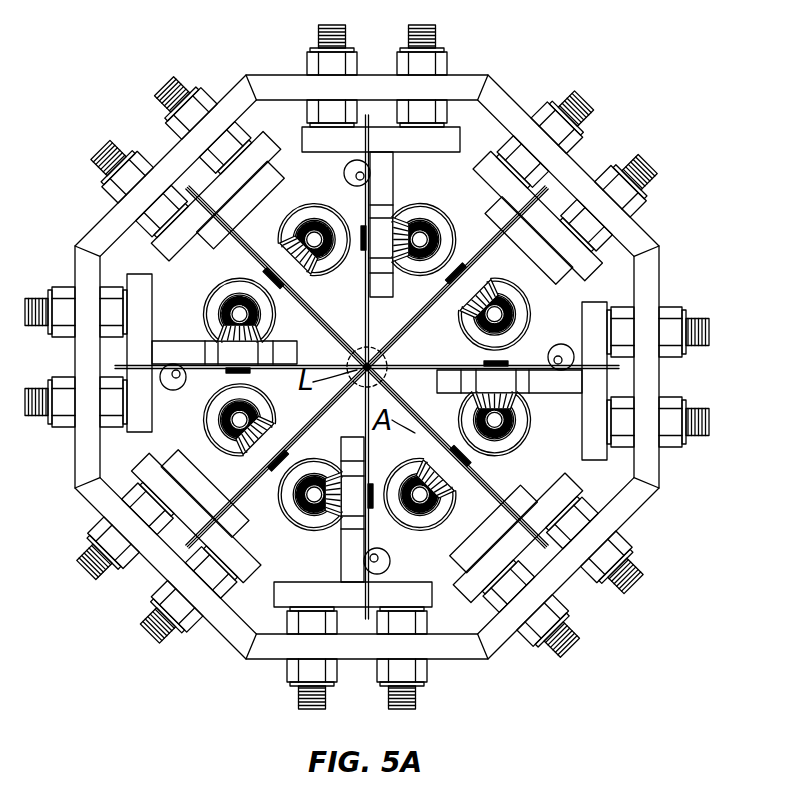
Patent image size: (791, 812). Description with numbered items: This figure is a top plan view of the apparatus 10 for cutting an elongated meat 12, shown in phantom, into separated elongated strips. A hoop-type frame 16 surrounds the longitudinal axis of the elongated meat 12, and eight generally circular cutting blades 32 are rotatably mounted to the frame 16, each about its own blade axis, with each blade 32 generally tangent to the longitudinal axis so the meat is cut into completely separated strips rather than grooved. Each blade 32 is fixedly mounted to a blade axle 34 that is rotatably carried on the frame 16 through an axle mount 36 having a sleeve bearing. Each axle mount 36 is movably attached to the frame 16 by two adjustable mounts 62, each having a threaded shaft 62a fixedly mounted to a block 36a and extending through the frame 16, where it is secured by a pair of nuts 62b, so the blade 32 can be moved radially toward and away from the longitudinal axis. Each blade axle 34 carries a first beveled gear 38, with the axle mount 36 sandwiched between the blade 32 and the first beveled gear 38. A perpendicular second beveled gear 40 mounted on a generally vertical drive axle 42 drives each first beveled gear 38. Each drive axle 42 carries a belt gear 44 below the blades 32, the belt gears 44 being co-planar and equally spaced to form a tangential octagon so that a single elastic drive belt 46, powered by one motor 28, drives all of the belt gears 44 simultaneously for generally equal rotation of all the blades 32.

The apparatus 10 is at (636, 50).
The elongated meat 12 is at (388, 360).
The frame 16 is at (573, 175).
The motor 28 is at (333, 187).
The cutting blade 32 is at (597, 395).
The blade axle 34 is at (460, 263).
The axle mount 36 is at (235, 178).
The block 36a is at (183, 167).
The first beveled gear 38 is at (550, 455).
The second beveled gear 40 is at (593, 339).
The drive axle 42 is at (595, 250).
The belt gear 44 is at (533, 305).
The drive belt 46 is at (353, 180).
The adjustable mount 62 is at (640, 560).
The threaded shaft 62a is at (567, 627).
The nut 62b is at (563, 597).